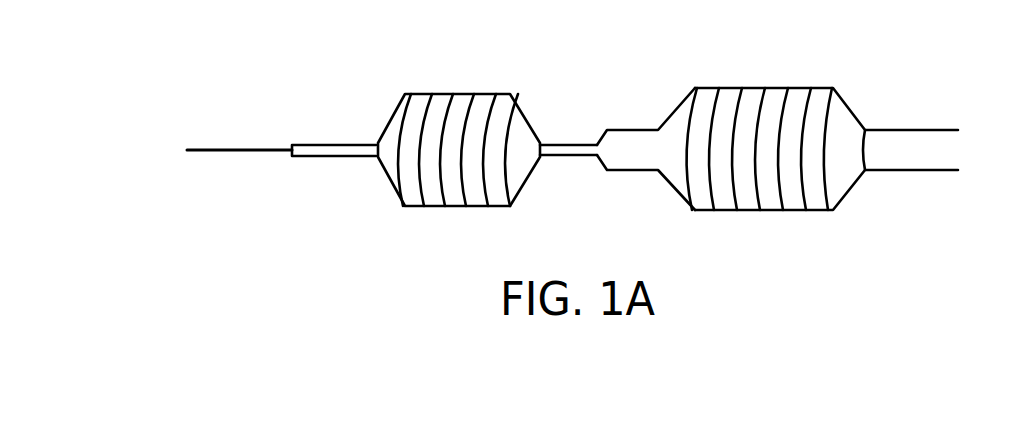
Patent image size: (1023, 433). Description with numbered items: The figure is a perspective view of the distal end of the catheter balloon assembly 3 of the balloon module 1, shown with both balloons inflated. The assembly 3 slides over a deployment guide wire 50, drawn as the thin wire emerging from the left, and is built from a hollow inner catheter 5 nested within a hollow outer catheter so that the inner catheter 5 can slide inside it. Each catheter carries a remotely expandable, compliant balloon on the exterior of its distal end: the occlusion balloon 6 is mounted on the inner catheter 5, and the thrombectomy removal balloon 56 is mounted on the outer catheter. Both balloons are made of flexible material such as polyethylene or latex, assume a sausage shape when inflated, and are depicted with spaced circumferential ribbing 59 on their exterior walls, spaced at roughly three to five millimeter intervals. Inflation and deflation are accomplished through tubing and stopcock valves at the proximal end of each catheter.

The balloon module 1 is at (700, 287).
The catheter balloon assembly 3 is at (911, 130).
The inner catheter 5 is at (567, 158).
The occlusion balloon 6 is at (460, 93).
The guide wire 50 is at (227, 149).
The thrombectomy balloon 56 is at (776, 88).
The circumferential ribbing 59 is at (760, 82).